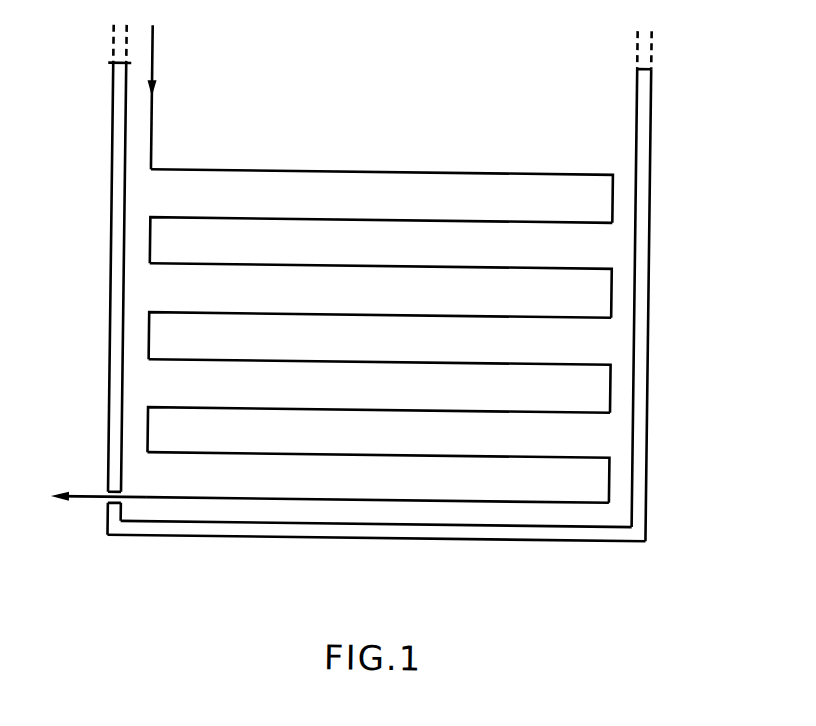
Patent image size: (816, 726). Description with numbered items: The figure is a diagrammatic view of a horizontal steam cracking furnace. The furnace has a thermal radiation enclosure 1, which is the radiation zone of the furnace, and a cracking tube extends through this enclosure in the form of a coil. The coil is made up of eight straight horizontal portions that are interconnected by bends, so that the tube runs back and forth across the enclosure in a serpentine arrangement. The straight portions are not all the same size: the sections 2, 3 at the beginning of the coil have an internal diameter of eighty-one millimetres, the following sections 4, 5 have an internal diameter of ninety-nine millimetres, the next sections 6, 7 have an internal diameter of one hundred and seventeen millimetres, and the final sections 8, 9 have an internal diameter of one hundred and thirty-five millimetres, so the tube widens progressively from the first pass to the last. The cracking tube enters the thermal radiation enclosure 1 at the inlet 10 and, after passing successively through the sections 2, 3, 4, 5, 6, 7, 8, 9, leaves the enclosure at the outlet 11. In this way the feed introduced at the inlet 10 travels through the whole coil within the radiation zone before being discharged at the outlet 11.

The thermal radiation enclosure 1 is at (113, 242).
The section 2 is at (541, 172).
The section 3 is at (541, 220).
The section 4 is at (541, 266).
The section 5 is at (541, 315).
The section 6 is at (541, 362).
The section 7 is at (541, 410).
The section 8 is at (541, 455).
The section 9 is at (538, 500).
The inlet 10 is at (149, 140).
The outlet 11 is at (136, 500).